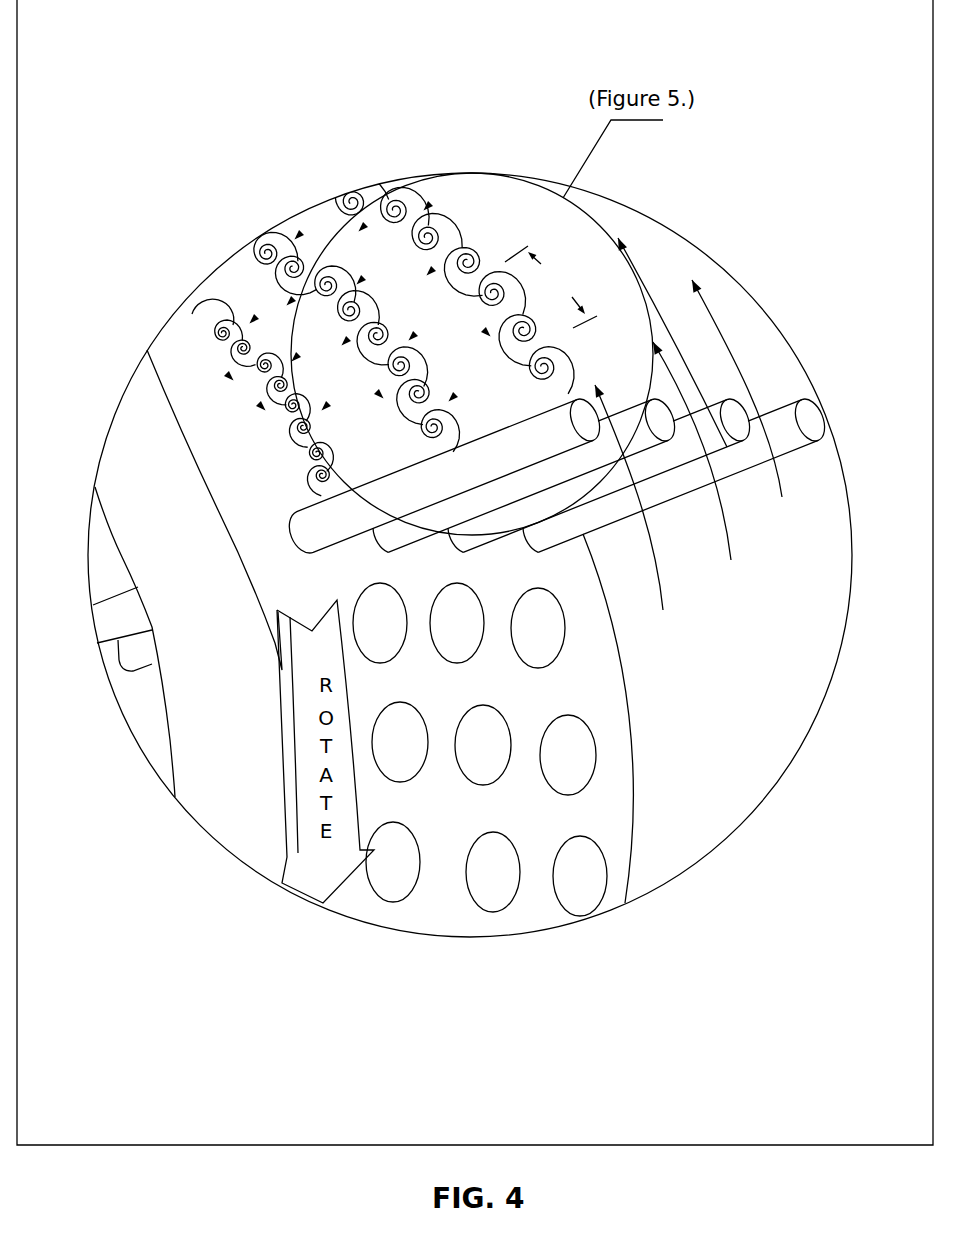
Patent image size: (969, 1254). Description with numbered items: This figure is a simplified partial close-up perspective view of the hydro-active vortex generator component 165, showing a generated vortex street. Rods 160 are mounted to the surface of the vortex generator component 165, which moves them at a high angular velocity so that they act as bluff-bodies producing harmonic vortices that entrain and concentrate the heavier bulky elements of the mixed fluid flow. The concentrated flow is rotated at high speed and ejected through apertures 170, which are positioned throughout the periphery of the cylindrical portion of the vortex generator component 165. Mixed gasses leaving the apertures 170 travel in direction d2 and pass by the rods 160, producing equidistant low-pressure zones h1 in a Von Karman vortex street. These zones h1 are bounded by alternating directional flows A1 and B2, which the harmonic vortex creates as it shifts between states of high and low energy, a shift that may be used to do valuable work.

The rods 160 is at (805, 386).
The hydro-active vortex generator component 165 is at (610, 695).
The apertures 170 is at (501, 868).
The alternating directional flow A1 is at (274, 458).
The alternating directional flow B2 is at (361, 458).
The low-pressure zones h1 is at (551, 287).
The direction of travel d2 is at (686, 444).